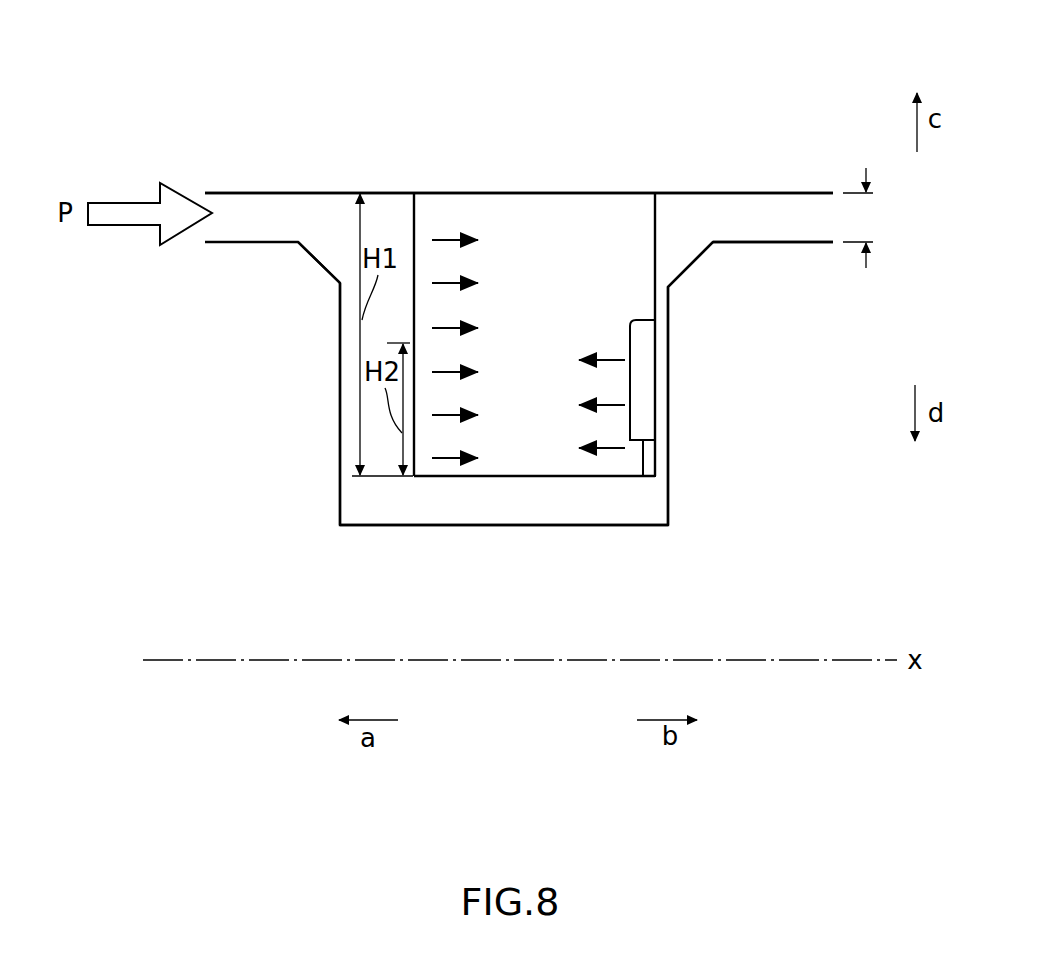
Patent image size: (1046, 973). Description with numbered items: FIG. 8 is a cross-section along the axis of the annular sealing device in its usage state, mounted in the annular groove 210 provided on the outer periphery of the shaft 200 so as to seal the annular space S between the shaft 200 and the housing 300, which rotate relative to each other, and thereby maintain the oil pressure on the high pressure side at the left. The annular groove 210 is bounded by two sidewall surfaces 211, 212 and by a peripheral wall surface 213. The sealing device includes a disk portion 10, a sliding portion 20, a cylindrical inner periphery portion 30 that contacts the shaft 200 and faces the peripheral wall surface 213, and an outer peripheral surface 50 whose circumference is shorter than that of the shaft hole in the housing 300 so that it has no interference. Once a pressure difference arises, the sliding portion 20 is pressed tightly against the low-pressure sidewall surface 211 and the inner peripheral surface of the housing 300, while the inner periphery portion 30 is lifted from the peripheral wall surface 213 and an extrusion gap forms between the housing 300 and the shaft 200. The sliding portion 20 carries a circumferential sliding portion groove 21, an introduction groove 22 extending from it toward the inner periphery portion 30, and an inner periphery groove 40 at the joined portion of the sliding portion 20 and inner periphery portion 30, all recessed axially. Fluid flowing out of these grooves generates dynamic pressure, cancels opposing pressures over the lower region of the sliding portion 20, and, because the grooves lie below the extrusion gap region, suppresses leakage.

The annular groove 210 is at (397, 86).
The housing 300 is at (744, 172).
The shaft 200 is at (771, 207).
The annular space S is at (320, 240).
The sidewall surface 212 is at (341, 315).
The peripheral wall surface 213 is at (375, 524).
The sidewall surface 211 is at (665, 311).
The disk portion 10 is at (413, 230).
The inner periphery portion 30 is at (605, 478).
The sliding portion 20 is at (665, 254).
The outer peripheral surface 50 is at (537, 192).
The sliding portion groove 21 is at (640, 334).
The introduction groove 22 is at (650, 448).
The inner periphery groove 40 is at (650, 470).